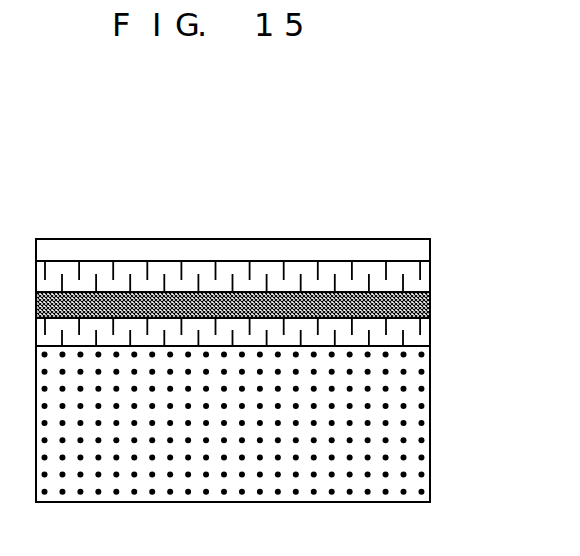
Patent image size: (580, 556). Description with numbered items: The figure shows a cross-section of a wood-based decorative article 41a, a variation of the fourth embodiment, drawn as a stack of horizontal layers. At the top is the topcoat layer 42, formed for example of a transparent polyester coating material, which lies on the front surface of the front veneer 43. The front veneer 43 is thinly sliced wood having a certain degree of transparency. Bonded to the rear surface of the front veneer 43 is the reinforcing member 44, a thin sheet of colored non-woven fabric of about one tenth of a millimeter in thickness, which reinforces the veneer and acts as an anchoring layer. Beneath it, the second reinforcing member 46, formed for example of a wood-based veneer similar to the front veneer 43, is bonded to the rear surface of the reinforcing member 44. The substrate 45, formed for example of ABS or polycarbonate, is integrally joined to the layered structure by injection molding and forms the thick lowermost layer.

The wood-based decorative article 41a is at (398, 220).
The topcoat layer 42 is at (419, 249).
The front veneer 43 is at (420, 278).
The reinforcing member 44 is at (430, 302).
The second reinforcing member 46 is at (420, 340).
The substrate 45 is at (420, 413).